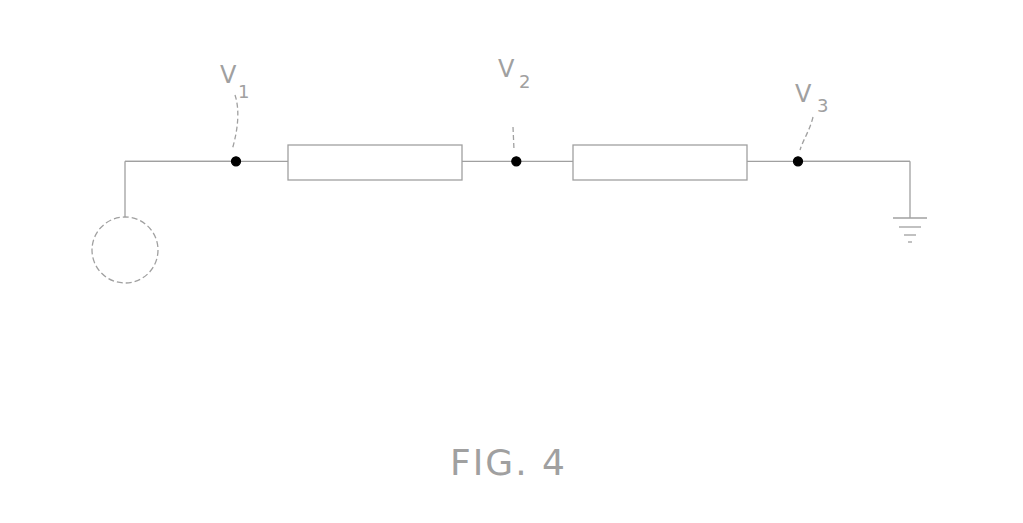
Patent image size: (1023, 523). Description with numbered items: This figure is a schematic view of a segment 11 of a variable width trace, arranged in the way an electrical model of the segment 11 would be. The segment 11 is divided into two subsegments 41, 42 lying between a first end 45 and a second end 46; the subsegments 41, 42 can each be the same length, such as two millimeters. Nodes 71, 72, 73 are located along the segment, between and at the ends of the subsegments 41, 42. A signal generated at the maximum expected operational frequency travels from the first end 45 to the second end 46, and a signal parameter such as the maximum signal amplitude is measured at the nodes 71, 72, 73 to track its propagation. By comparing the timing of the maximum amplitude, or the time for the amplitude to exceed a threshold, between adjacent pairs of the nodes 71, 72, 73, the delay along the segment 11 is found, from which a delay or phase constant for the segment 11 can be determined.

The segment 11 is at (343, 328).
The subsegment 41 is at (375, 162).
The subsegment 42 is at (660, 162).
The first end 45 is at (135, 140).
The second end 46 is at (930, 138).
The node 71 is at (233, 175).
The node 72 is at (517, 172).
The node 73 is at (798, 177).